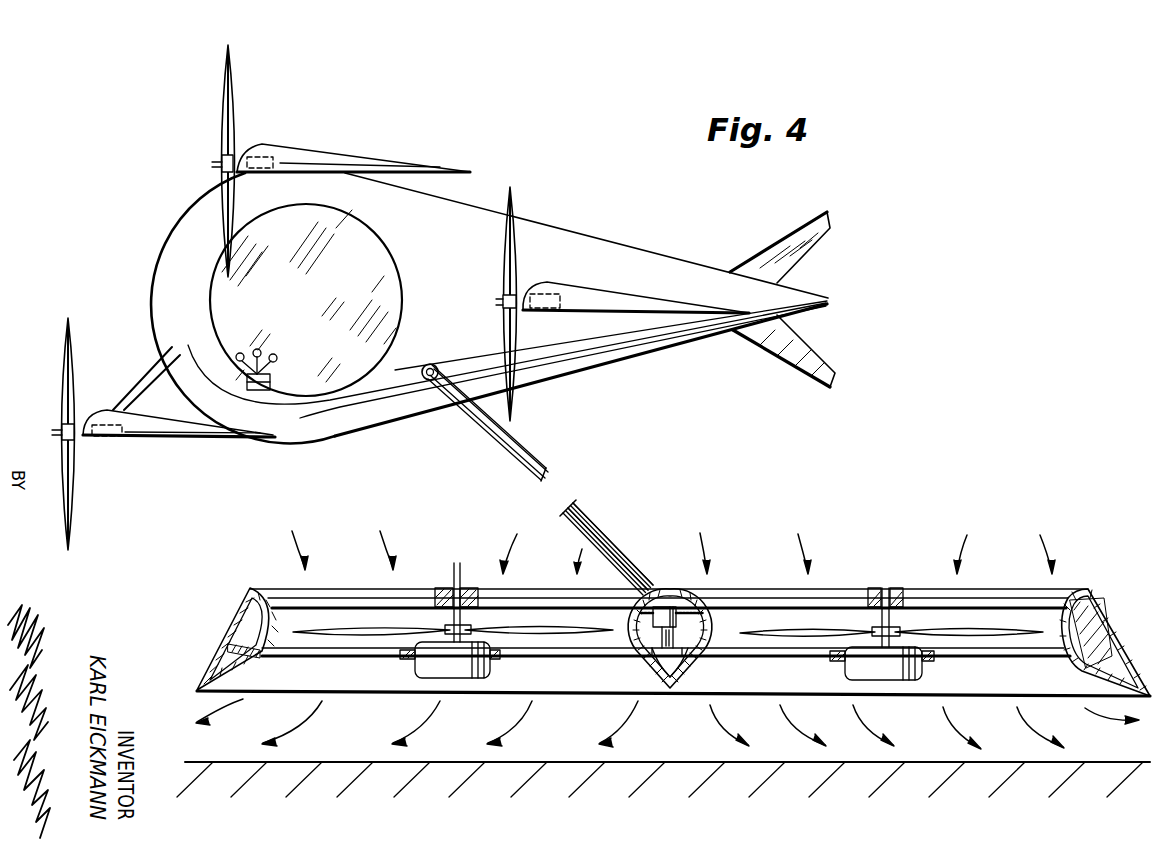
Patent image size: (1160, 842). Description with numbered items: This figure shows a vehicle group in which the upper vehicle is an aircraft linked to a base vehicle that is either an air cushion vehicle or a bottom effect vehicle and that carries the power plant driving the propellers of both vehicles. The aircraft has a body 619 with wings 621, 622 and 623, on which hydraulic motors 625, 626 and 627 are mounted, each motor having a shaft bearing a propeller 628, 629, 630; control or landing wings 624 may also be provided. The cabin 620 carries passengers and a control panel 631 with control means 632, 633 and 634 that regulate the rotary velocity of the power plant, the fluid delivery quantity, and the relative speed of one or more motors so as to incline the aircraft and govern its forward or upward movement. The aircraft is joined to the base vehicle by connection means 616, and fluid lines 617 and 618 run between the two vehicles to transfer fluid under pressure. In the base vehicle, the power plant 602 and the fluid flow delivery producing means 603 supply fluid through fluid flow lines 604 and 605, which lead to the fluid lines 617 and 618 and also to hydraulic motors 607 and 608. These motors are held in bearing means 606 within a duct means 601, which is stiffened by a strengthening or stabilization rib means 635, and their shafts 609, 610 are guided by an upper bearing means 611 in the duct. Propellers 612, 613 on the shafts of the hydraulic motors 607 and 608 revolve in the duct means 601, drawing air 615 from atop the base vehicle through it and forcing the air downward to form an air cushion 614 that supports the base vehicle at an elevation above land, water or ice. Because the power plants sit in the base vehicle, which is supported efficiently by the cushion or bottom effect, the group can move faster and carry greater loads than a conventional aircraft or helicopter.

The duct means 601 is at (236, 620).
The power plant 602 is at (663, 607).
The fluid flow delivery producing means 603 is at (655, 622).
The fluid flow line 604 is at (684, 672).
The fluid flow line 605 is at (656, 670).
The bearing means 606 is at (501, 659).
The hydraulic motor 607 is at (420, 660).
The hydraulic motor 608 is at (858, 668).
The shaft 609 is at (457, 588).
The shaft 610 is at (887, 588).
The upper bearing means 611 is at (442, 590).
The propeller 612 is at (546, 628).
The propeller 613 is at (980, 630).
The air cushion 614 is at (330, 731).
The air 615 is at (312, 547).
The connection means 616 is at (590, 525).
The fluid line 617 is at (605, 545).
The fluid line 618 is at (622, 568).
The body 619 is at (613, 255).
The cabin 620 is at (303, 262).
The wing 621 is at (178, 438).
The wing 622 is at (632, 306).
The wing 623 is at (333, 167).
The control or landing wings 624 is at (798, 253).
The hydraulic motor 625 is at (104, 438).
The hydraulic motor 626 is at (261, 157).
The hydraulic motor 627 is at (544, 294).
The propeller 628 is at (74, 376).
The propeller 629 is at (224, 118).
The propeller 630 is at (507, 242).
The control panel 631 is at (275, 383).
The control means 632 is at (238, 353).
The control means 633 is at (258, 349).
The control means 634 is at (278, 360).
The strengthening or stabilization rib means 635 is at (216, 647).